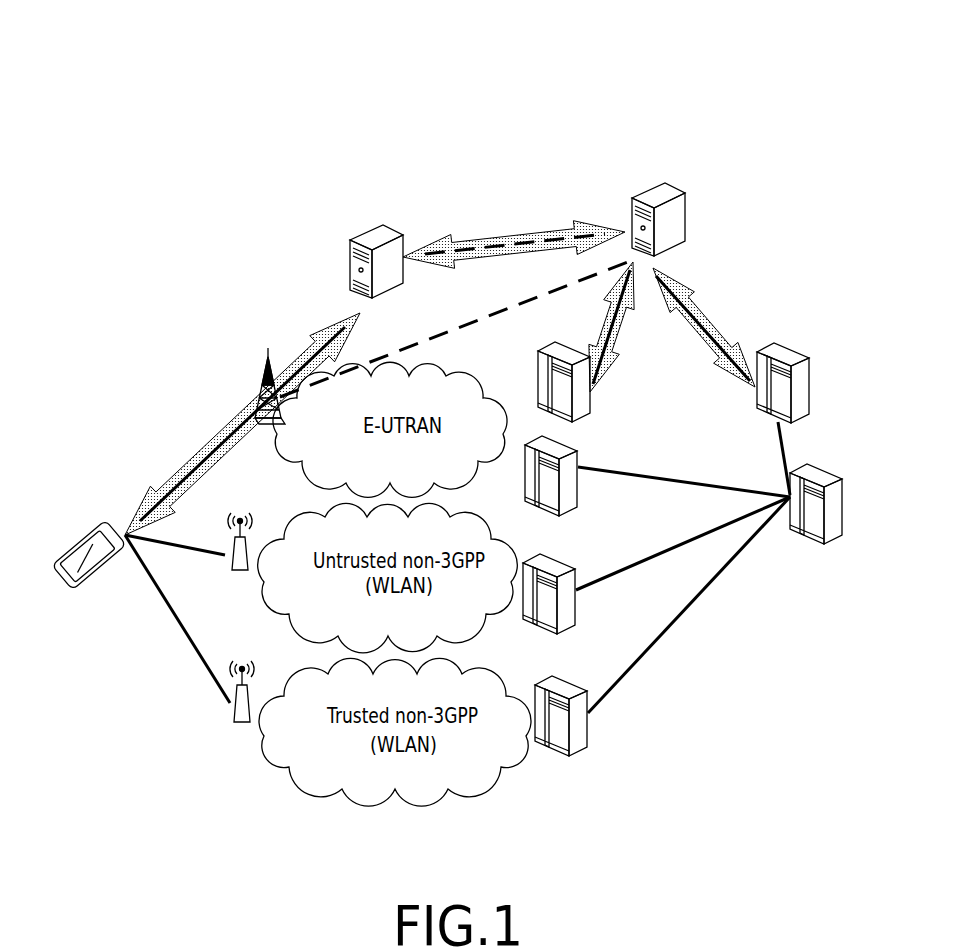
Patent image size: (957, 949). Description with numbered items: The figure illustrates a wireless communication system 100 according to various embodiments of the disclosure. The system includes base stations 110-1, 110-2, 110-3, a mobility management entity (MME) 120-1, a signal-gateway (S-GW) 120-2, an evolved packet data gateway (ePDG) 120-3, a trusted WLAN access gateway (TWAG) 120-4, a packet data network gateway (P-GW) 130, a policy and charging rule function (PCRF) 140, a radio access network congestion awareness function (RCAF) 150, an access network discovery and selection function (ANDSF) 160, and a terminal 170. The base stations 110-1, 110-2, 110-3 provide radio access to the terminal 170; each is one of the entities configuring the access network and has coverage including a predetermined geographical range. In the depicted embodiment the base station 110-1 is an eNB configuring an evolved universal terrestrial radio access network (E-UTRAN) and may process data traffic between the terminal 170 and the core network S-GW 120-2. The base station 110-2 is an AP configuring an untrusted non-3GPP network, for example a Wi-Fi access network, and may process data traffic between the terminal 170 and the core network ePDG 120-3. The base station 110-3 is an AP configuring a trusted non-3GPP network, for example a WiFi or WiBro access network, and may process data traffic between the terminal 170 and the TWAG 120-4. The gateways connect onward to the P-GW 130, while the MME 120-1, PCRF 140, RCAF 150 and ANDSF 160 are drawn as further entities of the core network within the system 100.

The wireless communication system 100 is at (795, 63).
The base station 110-1 is at (262, 372).
The base station 110-2 is at (233, 547).
The base station 110-3 is at (235, 716).
The mobility management entity 120-1 is at (586, 415).
The signal-gateway 120-2 is at (525, 497).
The evolved packet data gateway 120-3 is at (576, 612).
The trusted WLAN access gateway 120-4 is at (590, 733).
The packet data network gateway 130 is at (838, 472).
The policy and charging rule function 140 is at (803, 351).
The radio access network congestion awareness function 150 is at (685, 198).
The access network discovery and selection function 160 is at (400, 238).
The terminal 170 is at (84, 538).